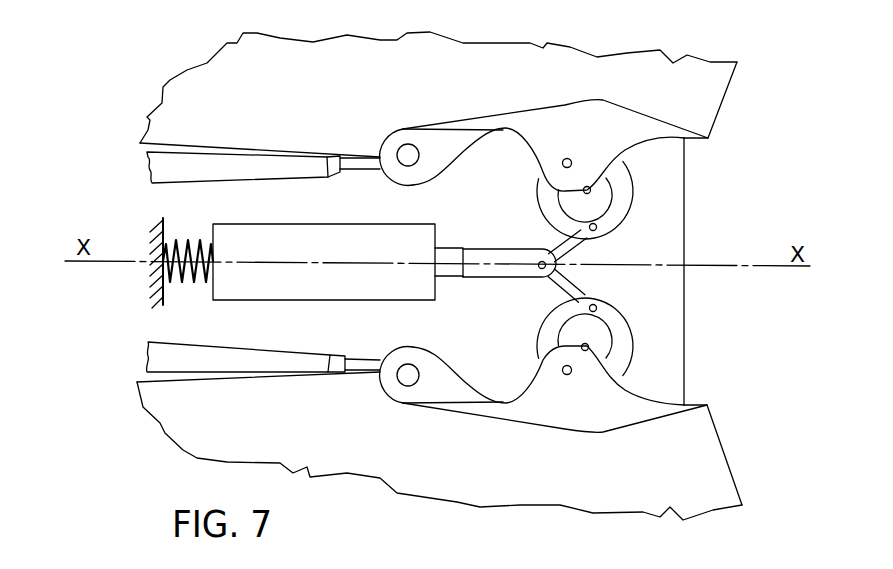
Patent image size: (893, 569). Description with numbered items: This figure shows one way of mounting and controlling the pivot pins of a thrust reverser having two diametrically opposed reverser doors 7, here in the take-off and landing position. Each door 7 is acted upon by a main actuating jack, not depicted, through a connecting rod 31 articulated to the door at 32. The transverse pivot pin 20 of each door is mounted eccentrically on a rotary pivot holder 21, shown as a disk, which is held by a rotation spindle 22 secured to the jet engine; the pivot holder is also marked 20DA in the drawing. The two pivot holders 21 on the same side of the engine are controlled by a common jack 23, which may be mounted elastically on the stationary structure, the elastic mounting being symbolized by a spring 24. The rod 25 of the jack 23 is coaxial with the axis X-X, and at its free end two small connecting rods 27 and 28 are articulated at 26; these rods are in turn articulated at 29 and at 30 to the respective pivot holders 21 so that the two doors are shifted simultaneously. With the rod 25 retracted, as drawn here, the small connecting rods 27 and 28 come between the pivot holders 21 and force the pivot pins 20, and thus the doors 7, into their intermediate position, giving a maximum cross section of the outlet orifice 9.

The reverser door 7 is at (210, 72).
The outlet orifice 9 is at (726, 93).
The pivot pin 20 is at (561, 163).
The clamping finger (double action) 20DA is at (548, 295).
The rotary pivot holder 21 is at (623, 172).
The rotation spindle 22 is at (614, 200).
The common jack 23 is at (327, 296).
The spring 24 is at (190, 284).
The rod of the jack 25 is at (471, 248).
The articulation of the connecting rods 26 is at (537, 270).
The small connecting rod 27 is at (553, 246).
The small connecting rod 28 is at (576, 280).
The articulation point 29 is at (597, 229).
The articulation point 30 is at (598, 310).
The connecting rod 31 is at (150, 166).
The articulation of the connecting rod 32 is at (407, 144).